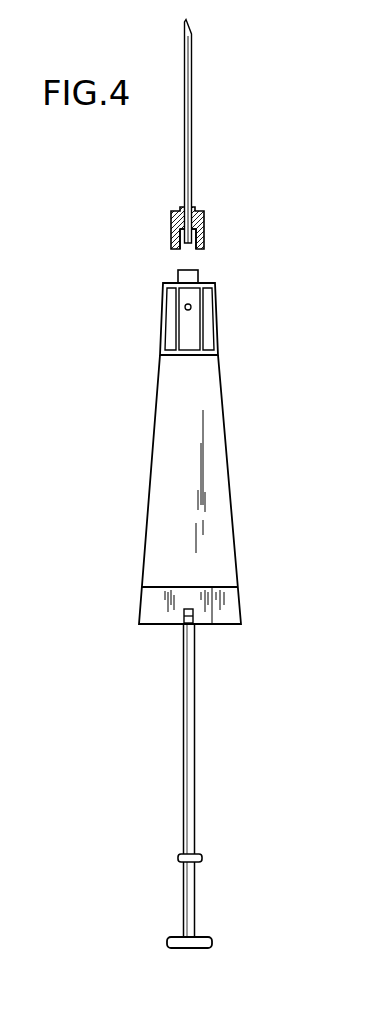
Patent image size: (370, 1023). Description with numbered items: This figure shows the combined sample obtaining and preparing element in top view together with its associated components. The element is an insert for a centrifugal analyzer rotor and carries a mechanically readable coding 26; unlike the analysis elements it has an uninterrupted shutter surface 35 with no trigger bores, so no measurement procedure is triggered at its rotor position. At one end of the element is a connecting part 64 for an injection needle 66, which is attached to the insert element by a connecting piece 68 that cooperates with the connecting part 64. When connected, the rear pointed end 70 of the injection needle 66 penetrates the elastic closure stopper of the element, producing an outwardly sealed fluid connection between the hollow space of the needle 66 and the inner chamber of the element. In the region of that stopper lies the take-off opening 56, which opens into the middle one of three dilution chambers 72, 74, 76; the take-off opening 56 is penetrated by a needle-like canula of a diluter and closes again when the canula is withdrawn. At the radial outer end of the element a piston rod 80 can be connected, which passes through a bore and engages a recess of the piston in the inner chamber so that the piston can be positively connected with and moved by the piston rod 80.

The mechanically readable coding 26 is at (213, 625).
The uninterrupted shutter surface 35 is at (232, 602).
The take-off opening 56 is at (185, 307).
The connecting part 64 is at (195, 277).
The injection needle 66 is at (193, 158).
The connecting piece 68 is at (205, 227).
The rear pointed end 70 is at (172, 237).
The dilution chamber 72 is at (217, 332).
The dilution chamber 74 is at (197, 320).
The dilution chamber 76 is at (168, 328).
The piston rod 80 is at (192, 800).